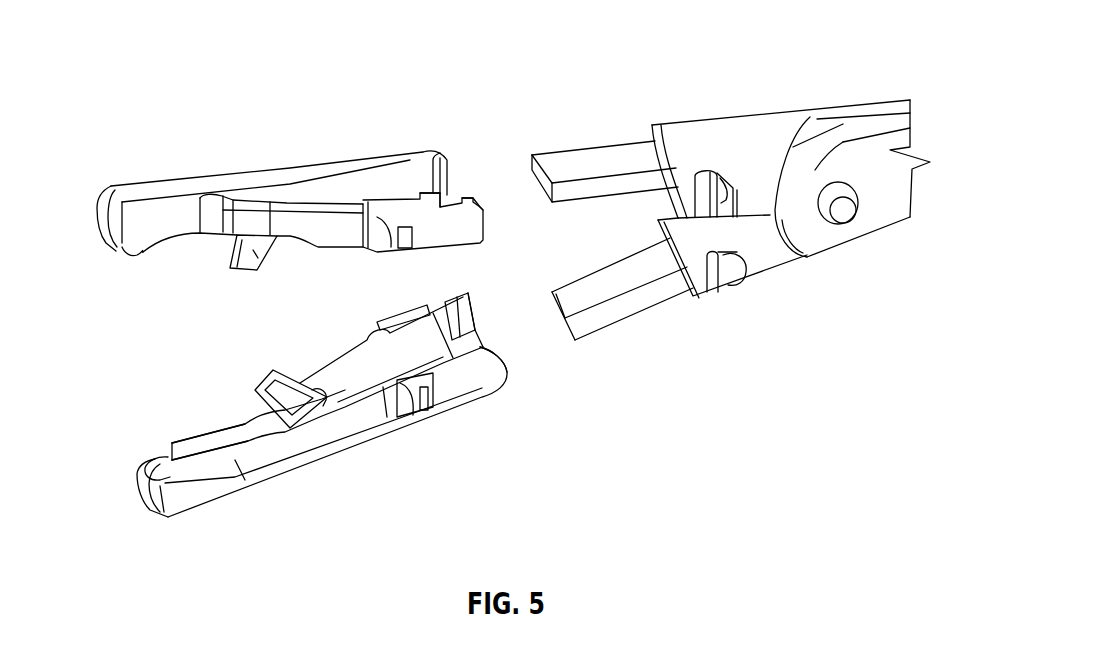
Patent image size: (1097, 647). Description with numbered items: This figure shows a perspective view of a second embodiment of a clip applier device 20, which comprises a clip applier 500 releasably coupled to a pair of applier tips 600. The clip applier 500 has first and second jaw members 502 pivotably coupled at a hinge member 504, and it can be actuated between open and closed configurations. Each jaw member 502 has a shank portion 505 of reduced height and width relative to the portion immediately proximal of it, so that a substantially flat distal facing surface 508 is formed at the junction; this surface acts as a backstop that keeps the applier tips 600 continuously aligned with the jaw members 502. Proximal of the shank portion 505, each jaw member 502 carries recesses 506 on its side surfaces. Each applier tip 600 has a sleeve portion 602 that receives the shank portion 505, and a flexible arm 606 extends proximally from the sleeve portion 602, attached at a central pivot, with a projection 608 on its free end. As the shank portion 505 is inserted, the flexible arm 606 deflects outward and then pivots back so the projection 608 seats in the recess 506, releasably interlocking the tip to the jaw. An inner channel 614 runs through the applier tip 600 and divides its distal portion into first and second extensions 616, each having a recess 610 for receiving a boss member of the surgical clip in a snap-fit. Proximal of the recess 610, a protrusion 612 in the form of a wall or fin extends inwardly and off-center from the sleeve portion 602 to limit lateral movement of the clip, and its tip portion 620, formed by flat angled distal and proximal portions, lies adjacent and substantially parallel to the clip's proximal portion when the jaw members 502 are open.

The clip applier device 20 is at (255, 45).
The clip applier 500 is at (846, 58).
The jaw members 502 is at (713, 130).
The hinge member 504 is at (883, 213).
The shank portion 505 is at (593, 160).
The recesses 506 is at (725, 168).
The flat distal facing surface 508 is at (654, 130).
The applier tip 600 is at (224, 150).
The sleeve portion 602 is at (347, 180).
The flexible arm 606 is at (430, 153).
The projection 608 is at (450, 177).
The recess 610 is at (127, 247).
The protrusion 612 is at (253, 253).
The inner channel 614 is at (213, 433).
The extensions 616 is at (103, 197).
The tip portion 620 is at (240, 272).